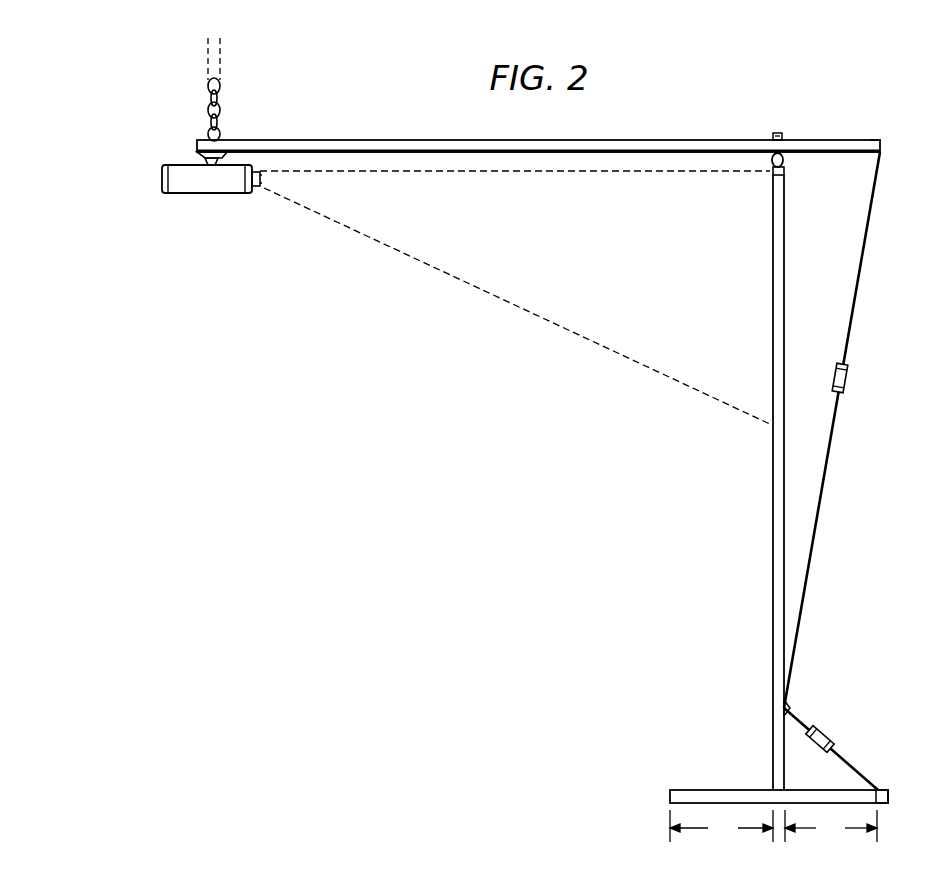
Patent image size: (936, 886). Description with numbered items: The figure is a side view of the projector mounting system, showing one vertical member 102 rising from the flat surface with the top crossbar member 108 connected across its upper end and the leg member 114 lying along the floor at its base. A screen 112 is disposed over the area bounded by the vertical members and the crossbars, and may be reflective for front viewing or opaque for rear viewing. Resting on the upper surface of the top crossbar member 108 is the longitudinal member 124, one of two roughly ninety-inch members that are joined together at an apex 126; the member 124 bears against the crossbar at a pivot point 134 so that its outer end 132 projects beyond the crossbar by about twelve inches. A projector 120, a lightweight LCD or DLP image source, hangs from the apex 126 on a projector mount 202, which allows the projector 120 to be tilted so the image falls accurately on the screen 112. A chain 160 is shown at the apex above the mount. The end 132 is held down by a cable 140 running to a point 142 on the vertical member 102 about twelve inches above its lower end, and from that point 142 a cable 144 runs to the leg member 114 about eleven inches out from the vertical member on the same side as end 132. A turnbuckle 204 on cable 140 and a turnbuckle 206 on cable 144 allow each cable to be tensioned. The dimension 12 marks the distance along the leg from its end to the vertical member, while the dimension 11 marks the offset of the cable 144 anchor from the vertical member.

The vertical member 102 is at (779, 485).
The top crossbar member 108 is at (770, 176).
The screen 112 is at (773, 292).
The leg member 114 is at (720, 790).
The projector 120 is at (210, 194).
The longitudinal member 124 is at (397, 140).
The apex 126 is at (199, 152).
The end of longitudinal member 132 is at (880, 140).
The pivot point 134 is at (784, 160).
The cable 140 is at (864, 262).
The point 142 is at (788, 707).
The cable 144 is at (858, 770).
The chain 160 is at (224, 104).
The projector mount 202 is at (186, 157).
The turnbuckle 204 is at (850, 378).
The turnbuckle 206 is at (829, 728).
The distance l1 11 is at (831, 826).
The distance l2 12 is at (721, 826).